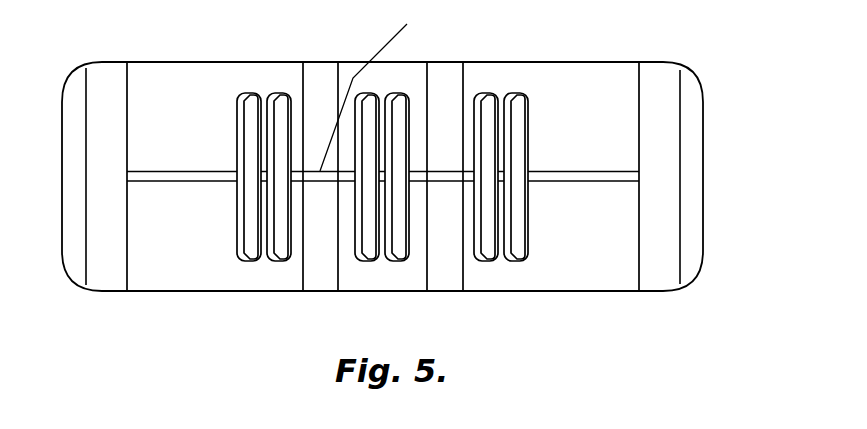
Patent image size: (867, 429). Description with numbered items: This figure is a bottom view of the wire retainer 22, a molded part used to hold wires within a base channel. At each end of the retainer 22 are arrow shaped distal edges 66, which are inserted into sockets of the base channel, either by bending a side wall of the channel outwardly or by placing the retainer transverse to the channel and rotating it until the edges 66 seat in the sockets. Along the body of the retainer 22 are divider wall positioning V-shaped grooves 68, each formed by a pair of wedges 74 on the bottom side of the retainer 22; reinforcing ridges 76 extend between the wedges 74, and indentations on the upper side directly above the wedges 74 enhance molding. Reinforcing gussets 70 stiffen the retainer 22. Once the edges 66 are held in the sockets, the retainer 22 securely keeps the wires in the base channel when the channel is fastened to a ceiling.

The wire retainer 22 is at (710, 263).
The arrow shaped distal edges 66 is at (702, 155).
The divider wall positioning V-shaped grooves 68 is at (380, 126).
The reinforcing gussets 70 is at (572, 172).
The wedges 74 is at (279, 95).
The reinforcing ridges 76 is at (377, 85).